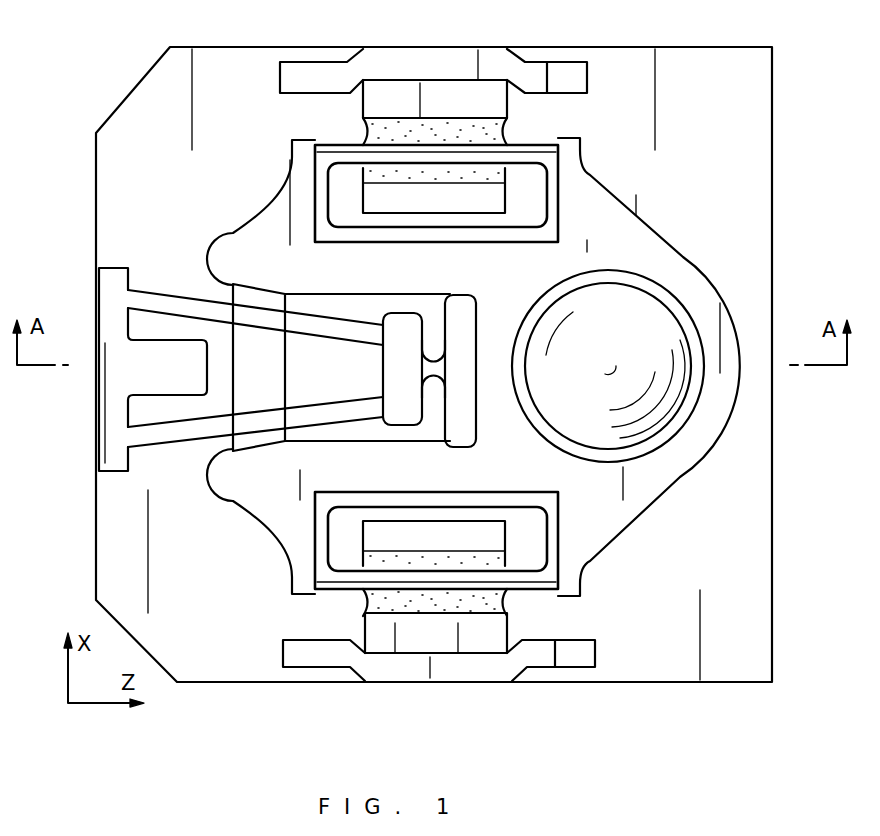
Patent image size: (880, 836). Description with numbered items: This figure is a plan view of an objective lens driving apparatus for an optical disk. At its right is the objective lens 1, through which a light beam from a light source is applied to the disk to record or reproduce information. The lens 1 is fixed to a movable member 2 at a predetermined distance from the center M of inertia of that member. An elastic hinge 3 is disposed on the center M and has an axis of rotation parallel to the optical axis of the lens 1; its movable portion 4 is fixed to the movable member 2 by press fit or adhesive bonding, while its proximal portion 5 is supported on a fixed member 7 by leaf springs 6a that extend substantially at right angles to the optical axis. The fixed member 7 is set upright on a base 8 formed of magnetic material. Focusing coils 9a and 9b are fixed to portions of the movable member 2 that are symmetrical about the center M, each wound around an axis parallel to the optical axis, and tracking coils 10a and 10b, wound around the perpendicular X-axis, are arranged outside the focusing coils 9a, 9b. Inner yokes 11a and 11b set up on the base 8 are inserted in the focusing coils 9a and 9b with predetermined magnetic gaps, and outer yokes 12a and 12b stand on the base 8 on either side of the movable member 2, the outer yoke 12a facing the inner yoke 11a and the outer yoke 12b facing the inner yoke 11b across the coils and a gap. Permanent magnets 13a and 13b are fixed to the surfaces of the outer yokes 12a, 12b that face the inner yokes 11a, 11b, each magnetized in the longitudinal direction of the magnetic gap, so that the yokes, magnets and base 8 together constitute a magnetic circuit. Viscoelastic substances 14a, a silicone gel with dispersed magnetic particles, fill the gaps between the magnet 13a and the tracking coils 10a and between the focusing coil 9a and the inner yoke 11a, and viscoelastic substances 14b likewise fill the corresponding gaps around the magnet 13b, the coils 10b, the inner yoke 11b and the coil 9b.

The objective lens 1 is at (652, 312).
The movable member 2 is at (668, 482).
The elastic hinge 3 is at (440, 341).
The movable portion 4 is at (455, 432).
The proximal portion 5 is at (407, 372).
The center of inertia M is at (430, 368).
The leaf springs 6a is at (170, 278).
The fixed member 7 is at (115, 264).
The base 8 is at (768, 637).
The focusing coil 9a is at (552, 200).
The focusing coil 9b is at (320, 517).
The tracking coils 10a is at (320, 143).
The tracking coils 10b is at (343, 590).
The inner yoke 11a is at (393, 200).
The inner yoke 11b is at (390, 530).
The outer yoke 12a is at (453, 67).
The outer yoke 12b is at (455, 667).
The permanent magnet 13a is at (380, 88).
The permanent magnet 13b is at (410, 640).
The viscoelastic substances 14a is at (480, 126).
The viscoelastic substances 14b is at (493, 560).